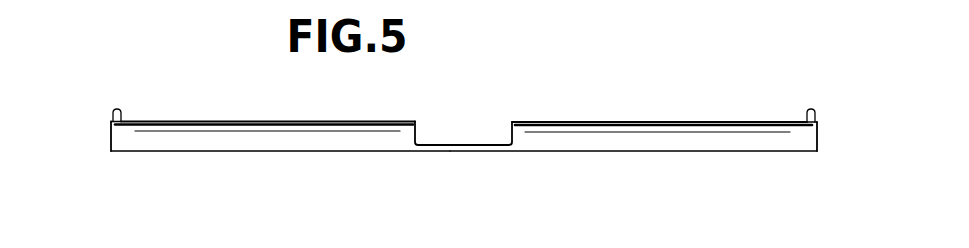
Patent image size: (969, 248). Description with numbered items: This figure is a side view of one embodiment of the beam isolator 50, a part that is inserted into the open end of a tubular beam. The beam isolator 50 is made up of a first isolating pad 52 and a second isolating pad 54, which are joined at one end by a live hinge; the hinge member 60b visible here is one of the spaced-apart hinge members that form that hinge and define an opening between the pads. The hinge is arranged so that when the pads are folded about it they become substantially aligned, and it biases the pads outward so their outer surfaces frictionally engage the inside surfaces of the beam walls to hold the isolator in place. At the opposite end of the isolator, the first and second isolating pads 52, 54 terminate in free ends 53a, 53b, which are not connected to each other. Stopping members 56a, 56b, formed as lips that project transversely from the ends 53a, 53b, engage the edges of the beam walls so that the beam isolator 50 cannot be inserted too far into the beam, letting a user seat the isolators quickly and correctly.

The beam isolator 50 is at (598, 76).
The first isolating pad 52 is at (648, 140).
The second isolating pad 54 is at (263, 138).
The hinge member 60b is at (450, 143).
The free end 53a is at (818, 137).
The free end 53b is at (111, 137).
The stopping member 56a is at (812, 109).
The stopping member 56b is at (114, 109).